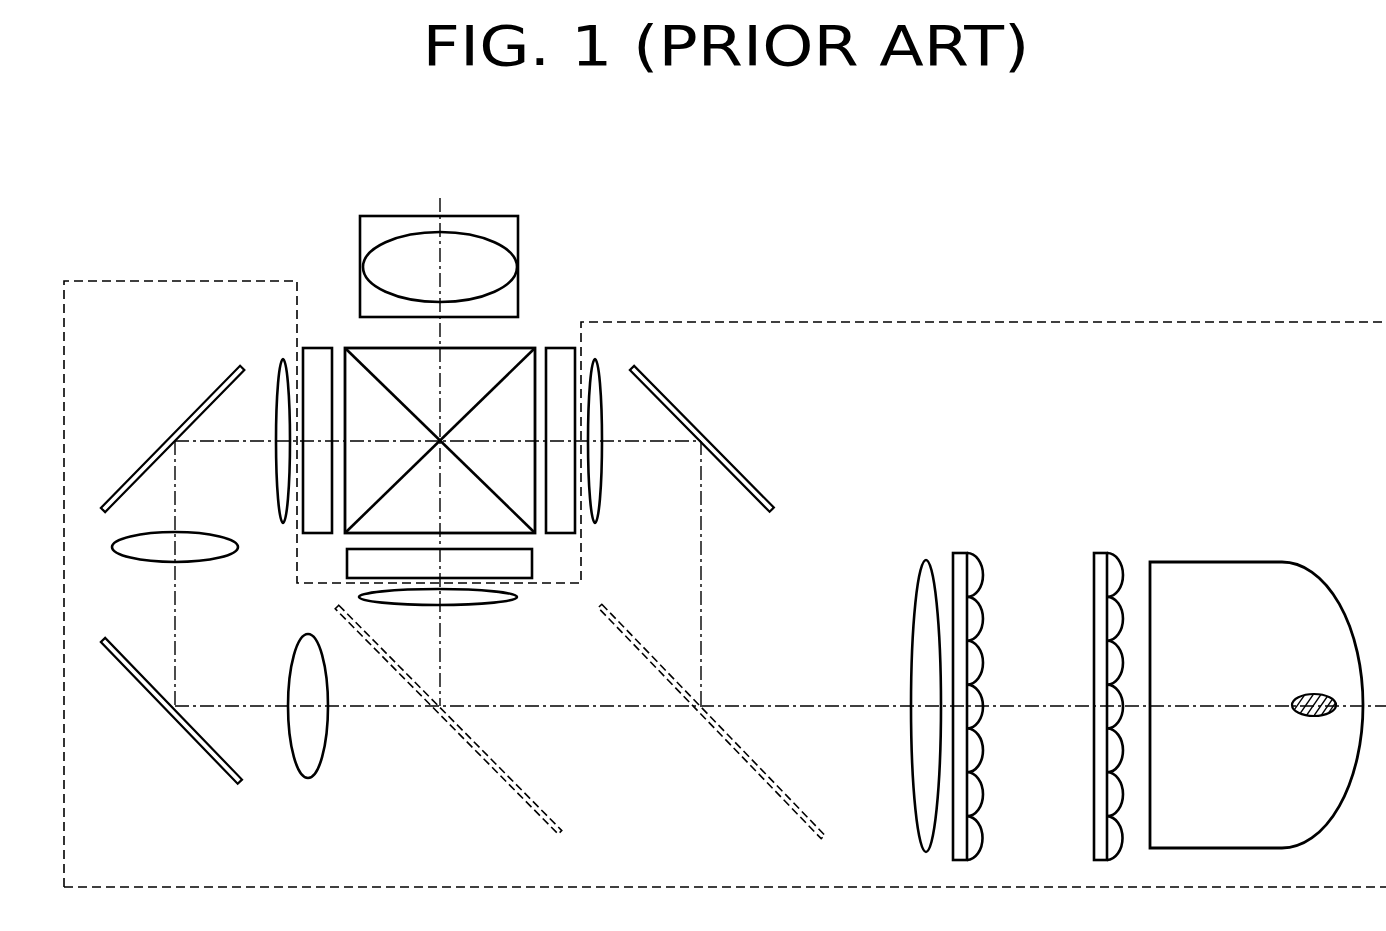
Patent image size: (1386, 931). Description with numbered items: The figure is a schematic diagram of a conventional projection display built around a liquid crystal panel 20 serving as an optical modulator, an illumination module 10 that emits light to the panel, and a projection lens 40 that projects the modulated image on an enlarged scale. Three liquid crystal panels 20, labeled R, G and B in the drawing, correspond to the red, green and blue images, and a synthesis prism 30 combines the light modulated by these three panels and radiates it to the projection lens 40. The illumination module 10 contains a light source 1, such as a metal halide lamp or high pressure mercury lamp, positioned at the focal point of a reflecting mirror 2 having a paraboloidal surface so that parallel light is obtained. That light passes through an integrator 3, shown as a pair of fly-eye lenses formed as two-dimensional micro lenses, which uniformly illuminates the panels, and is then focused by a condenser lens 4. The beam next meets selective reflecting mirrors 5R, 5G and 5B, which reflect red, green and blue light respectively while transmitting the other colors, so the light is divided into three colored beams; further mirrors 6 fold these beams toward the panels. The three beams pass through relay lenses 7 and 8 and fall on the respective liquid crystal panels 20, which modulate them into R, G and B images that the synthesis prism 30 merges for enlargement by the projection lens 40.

The light source 1 is at (1318, 695).
The reflecting mirror 2 is at (1229, 562).
The integrator 3 is at (1120, 539).
The condenser lens 4 is at (926, 560).
The mirror 5B is at (213, 762).
The mirror 5G is at (485, 765).
The mirror 5R is at (748, 765).
The mirror 6 is at (205, 400).
The relay lens 7 is at (600, 362).
The relay lens 8 is at (213, 562).
The illumination module 10 is at (1043, 322).
The liquid crystal panel 20 is at (318, 348).
The synthesis prism 30 is at (530, 348).
The projection lens 40 is at (390, 216).